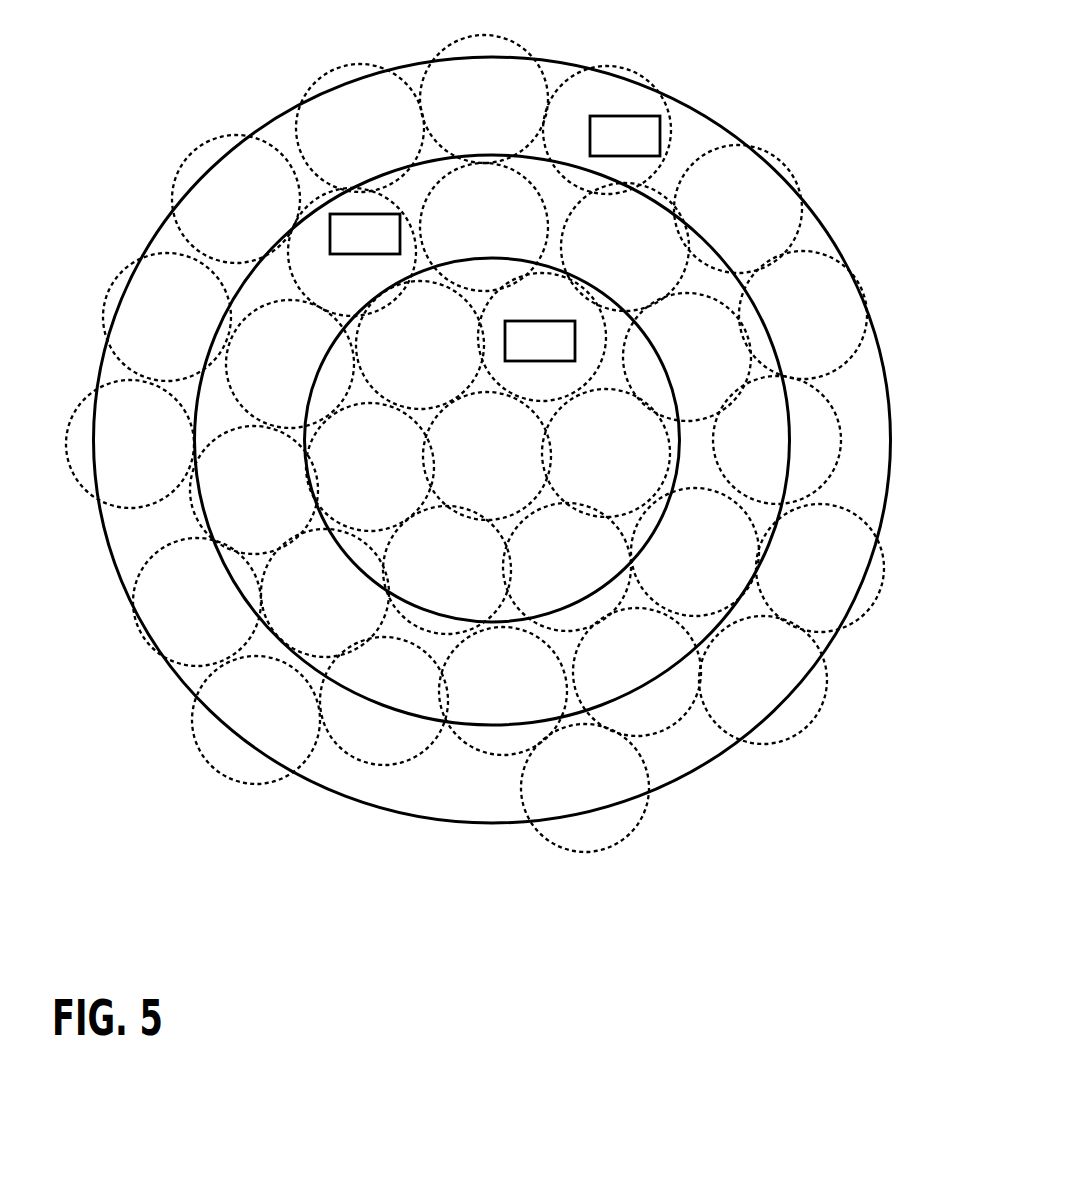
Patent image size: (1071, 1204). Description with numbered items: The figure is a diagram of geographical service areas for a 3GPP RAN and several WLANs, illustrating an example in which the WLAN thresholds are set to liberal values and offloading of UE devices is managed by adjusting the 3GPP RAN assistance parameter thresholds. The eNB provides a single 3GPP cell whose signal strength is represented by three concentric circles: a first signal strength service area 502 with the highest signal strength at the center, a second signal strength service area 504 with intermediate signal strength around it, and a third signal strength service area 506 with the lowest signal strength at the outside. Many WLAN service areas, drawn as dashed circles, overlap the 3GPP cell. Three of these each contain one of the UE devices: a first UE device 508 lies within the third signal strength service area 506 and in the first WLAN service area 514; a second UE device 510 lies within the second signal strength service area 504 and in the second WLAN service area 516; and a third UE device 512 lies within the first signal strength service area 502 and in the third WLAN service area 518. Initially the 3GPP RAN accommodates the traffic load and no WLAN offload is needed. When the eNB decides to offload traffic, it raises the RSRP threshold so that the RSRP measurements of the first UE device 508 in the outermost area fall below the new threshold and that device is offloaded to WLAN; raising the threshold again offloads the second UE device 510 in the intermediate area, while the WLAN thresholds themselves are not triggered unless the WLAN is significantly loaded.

The first signal strength service area 502 is at (682, 440).
The second signal strength service area 504 is at (790, 405).
The third signal strength service area 506 is at (828, 227).
The first UE device 508 is at (660, 133).
The second UE device 510 is at (396, 230).
The third UE device 512 is at (575, 339).
The first WLAN service area 514 is at (630, 72).
The second WLAN service area 516 is at (297, 285).
The third WLAN service area 518 is at (588, 297).